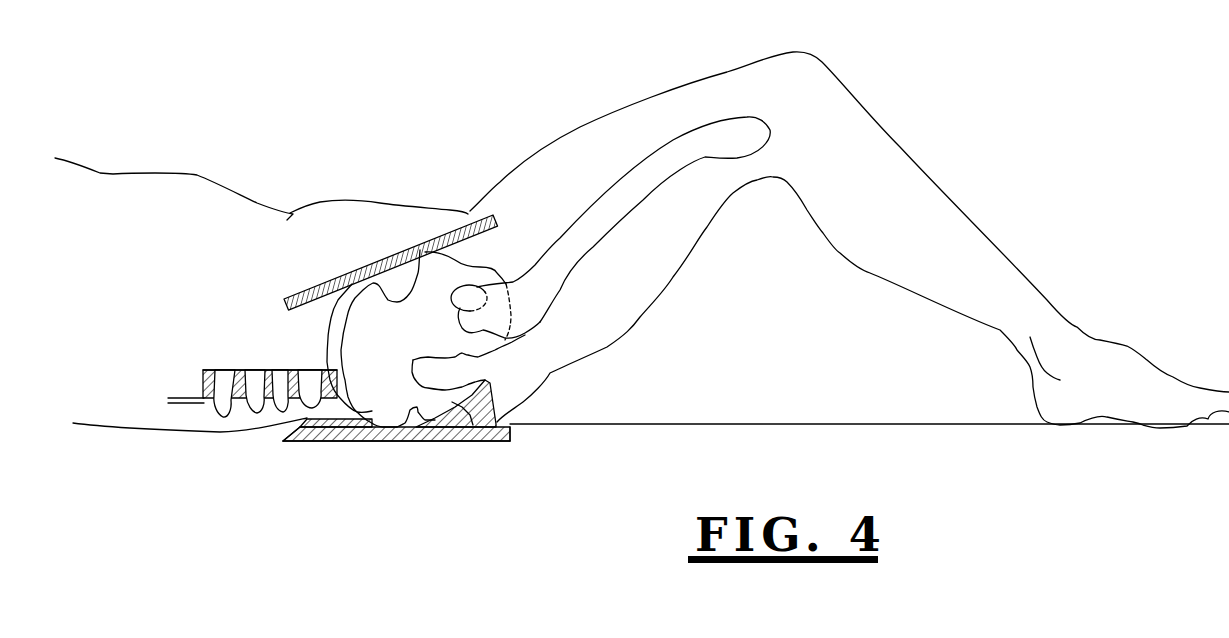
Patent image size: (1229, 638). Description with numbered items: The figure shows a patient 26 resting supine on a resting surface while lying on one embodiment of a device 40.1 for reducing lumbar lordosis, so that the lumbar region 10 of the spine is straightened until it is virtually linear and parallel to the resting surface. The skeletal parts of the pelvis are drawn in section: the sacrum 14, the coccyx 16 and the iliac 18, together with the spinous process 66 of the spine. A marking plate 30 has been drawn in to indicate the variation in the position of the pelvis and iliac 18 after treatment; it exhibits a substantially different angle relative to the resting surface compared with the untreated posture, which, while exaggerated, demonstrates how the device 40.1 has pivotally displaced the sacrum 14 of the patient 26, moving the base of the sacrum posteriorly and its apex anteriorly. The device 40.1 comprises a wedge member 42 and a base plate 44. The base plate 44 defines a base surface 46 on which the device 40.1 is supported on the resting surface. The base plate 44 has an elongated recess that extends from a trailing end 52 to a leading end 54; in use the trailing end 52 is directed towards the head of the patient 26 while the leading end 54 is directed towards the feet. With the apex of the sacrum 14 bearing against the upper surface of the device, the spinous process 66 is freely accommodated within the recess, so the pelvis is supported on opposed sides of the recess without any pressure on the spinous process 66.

The lumbar region 10 is at (252, 410).
The sacrum 14 is at (466, 441).
The coccyx 16 is at (480, 378).
The iliac 18 is at (333, 344).
The patient 26 is at (627, 89).
The marking plate 30 is at (406, 249).
The device 40.1 is at (430, 466).
The wedge member 42 is at (494, 403).
The base plate 44 is at (352, 441).
The base surface 46 is at (422, 441).
The trailing end 52 is at (273, 441).
The leading end 54 is at (511, 434).
The spinous process 66 is at (283, 414).